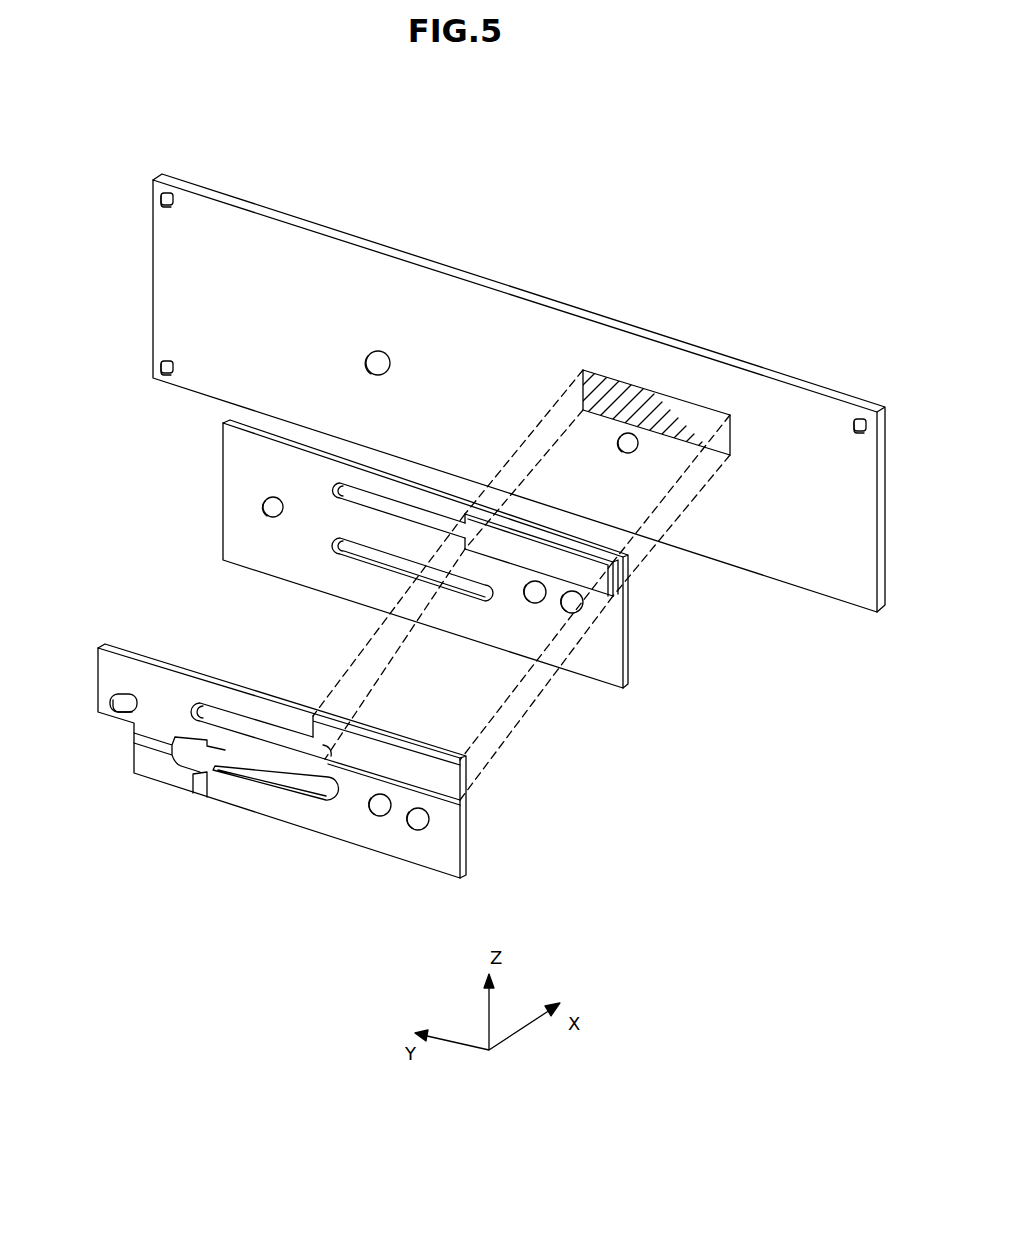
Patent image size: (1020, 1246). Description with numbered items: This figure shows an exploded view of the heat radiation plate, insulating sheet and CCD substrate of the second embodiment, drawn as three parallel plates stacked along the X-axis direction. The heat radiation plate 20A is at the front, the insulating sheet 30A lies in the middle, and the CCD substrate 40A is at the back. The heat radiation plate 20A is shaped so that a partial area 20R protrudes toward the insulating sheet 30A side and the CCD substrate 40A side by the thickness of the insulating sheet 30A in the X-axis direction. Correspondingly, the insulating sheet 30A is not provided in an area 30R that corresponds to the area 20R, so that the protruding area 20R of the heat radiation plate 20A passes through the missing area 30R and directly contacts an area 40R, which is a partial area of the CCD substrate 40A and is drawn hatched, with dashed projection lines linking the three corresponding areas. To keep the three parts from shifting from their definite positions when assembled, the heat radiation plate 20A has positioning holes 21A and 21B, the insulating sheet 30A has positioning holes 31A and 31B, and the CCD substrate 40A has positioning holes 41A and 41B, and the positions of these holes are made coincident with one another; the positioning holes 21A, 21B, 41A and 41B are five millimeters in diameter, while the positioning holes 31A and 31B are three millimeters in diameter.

The heat radiation plate 20A is at (425, 856).
The area 20R is at (405, 762).
The positioning hole 21A is at (112, 708).
The positioning hole 21B is at (372, 809).
The insulating sheet 30A is at (591, 682).
The area 30R is at (582, 570).
The positioning hole 31A is at (263, 504).
The positioning hole 31B is at (531, 601).
The CCD substrate 40A is at (775, 585).
The area 40R is at (696, 402).
The positioning hole 41A is at (370, 357).
The positioning hole 41B is at (620, 453).